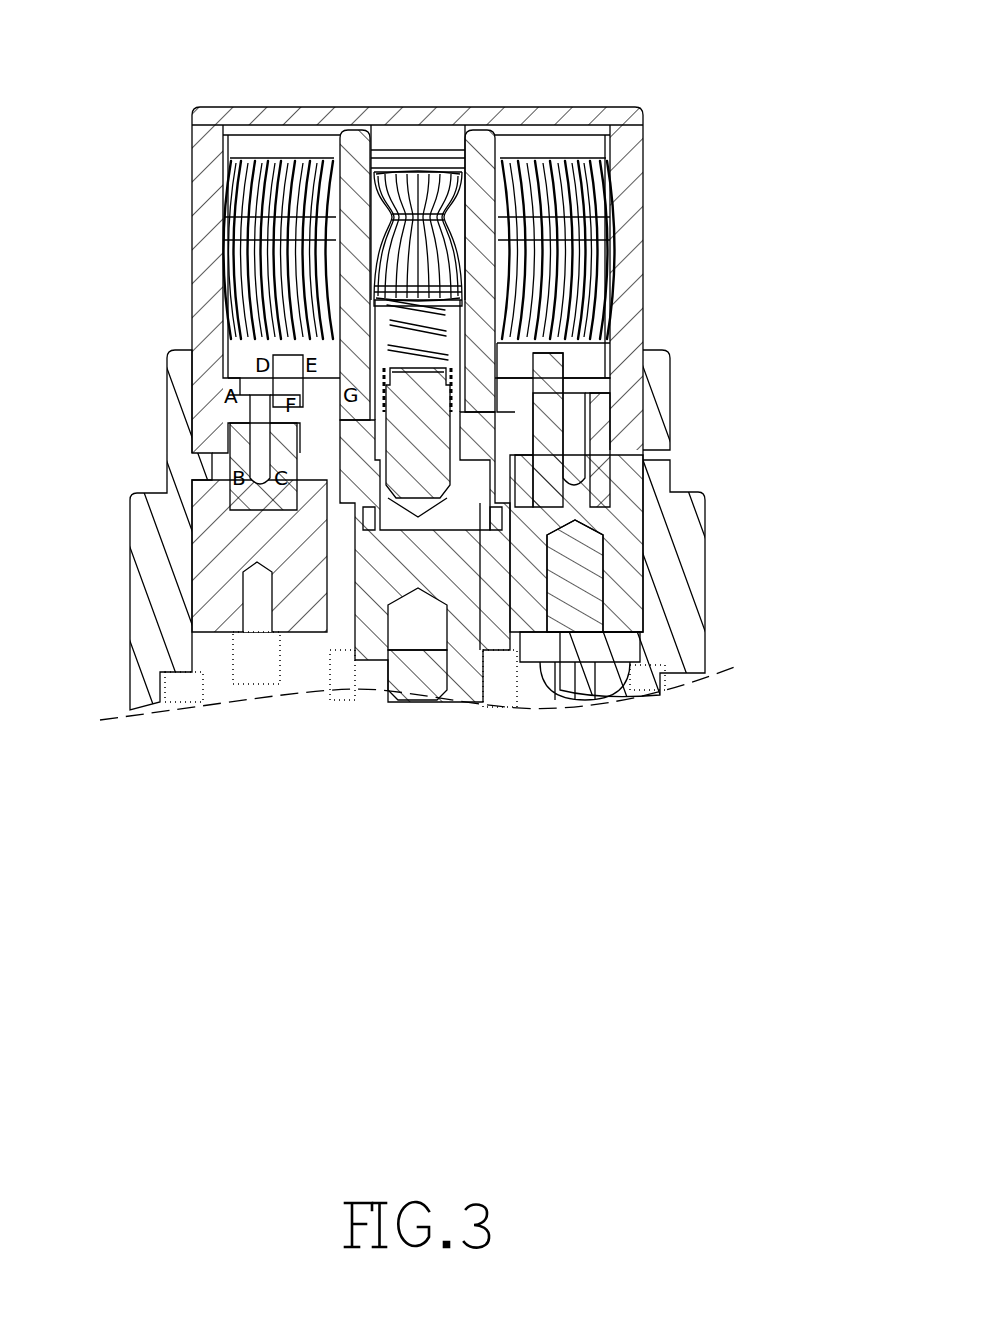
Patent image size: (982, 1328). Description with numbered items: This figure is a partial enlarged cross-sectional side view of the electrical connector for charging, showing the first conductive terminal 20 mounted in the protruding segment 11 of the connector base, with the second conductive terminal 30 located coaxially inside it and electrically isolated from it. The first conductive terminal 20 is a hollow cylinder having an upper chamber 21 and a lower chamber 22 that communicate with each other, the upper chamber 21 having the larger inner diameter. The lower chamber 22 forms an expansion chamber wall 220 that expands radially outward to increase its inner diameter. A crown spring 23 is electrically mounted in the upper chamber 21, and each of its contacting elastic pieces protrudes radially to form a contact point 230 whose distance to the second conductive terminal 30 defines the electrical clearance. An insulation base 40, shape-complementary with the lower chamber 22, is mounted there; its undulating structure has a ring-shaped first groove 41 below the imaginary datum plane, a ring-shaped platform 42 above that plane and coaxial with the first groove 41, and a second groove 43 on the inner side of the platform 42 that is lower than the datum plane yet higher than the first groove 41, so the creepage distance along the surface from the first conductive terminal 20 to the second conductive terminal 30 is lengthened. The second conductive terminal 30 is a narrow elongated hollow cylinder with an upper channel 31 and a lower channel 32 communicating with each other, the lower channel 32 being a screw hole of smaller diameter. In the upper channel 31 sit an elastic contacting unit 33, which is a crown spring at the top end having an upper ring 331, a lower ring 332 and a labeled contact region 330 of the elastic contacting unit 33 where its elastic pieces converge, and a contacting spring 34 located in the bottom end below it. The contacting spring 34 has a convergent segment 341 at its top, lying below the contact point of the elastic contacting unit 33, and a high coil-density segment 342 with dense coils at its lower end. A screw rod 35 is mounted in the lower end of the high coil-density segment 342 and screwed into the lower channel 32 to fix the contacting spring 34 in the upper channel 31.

The protruding segment 11 is at (688, 583).
The first conductive terminal 20 is at (632, 152).
The upper chamber 21 is at (605, 228).
The lower chamber 22 is at (596, 408).
The crown spring 23 is at (278, 150).
The second conductive terminal 30 is at (355, 135).
The upper channel 31 is at (455, 215).
The lower channel 32 is at (432, 480).
The elastic contacting unit 33 is at (426, 152).
The contacting spring 34 is at (448, 318).
The screw rod 35 is at (410, 473).
The insulation base 40 is at (596, 465).
The first groove 41 is at (578, 443).
The platform 42 is at (552, 368).
The second groove 43 is at (522, 345).
The expansion chamber wall 220 is at (600, 518).
The contact point 230 is at (235, 228).
The contact lower ring 330 is at (380, 258).
The upper ring 331 is at (452, 163).
The lower ring 332 is at (378, 302).
The convergent segment 341 is at (403, 180).
The high coil-density segment 342 is at (452, 400).